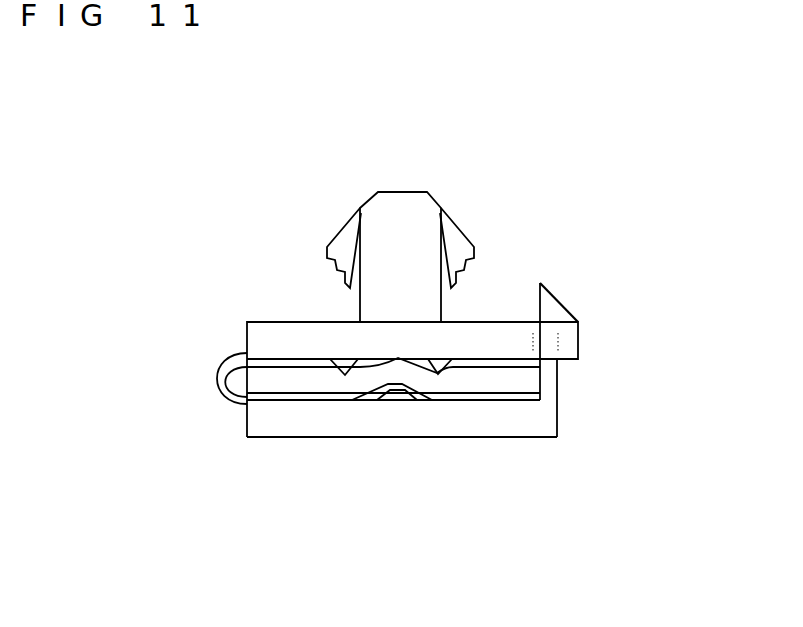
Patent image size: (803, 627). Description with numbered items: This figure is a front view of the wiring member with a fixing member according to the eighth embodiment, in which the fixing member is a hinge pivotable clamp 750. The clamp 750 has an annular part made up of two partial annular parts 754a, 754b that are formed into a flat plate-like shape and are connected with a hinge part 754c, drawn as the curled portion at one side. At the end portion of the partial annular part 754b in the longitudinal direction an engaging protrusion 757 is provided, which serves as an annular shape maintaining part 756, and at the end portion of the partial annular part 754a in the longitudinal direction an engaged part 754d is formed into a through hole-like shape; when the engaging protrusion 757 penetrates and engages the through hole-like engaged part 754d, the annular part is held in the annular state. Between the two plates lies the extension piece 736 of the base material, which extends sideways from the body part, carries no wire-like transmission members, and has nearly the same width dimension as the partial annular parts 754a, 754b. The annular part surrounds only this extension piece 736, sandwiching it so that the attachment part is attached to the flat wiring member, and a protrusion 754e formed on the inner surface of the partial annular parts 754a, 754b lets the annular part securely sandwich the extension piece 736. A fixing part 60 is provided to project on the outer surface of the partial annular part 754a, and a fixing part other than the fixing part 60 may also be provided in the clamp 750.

The hinge pivotable clamp 750 is at (365, 187).
The fixing part 60 is at (432, 192).
The partial annular part 754a is at (267, 332).
The partial annular part 754b is at (412, 436).
The hinge part 754c is at (228, 393).
The engaged part 754d is at (560, 368).
The protrusion 754e is at (343, 371).
The extension piece 736 is at (445, 388).
The engaging protrusion 757 is at (605, 337).
The annular shape maintaining part 756 is at (558, 302).